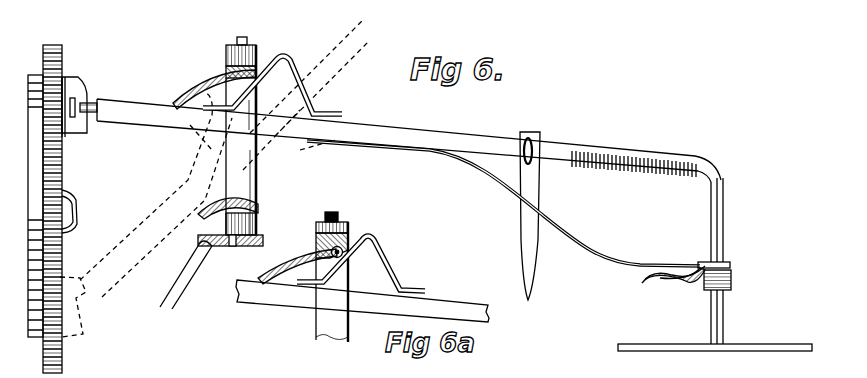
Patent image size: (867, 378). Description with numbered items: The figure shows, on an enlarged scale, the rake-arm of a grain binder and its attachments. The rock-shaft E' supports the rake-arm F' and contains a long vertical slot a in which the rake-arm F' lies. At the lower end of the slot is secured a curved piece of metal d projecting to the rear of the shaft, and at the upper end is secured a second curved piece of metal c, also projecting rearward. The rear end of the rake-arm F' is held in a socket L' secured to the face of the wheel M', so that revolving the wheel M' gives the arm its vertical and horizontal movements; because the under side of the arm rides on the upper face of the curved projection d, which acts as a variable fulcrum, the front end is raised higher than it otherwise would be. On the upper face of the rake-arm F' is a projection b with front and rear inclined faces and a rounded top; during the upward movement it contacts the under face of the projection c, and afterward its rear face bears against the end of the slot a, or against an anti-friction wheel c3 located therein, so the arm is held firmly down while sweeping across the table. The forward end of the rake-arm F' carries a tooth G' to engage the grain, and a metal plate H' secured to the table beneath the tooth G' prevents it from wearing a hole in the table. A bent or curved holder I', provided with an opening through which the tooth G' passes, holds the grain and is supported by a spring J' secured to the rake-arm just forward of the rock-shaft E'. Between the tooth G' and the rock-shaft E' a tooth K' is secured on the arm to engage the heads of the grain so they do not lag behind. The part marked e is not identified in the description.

In FIG. 6, the socket L' is at (81, 99).
In FIG. 6, the wheel M' is at (54, 209).
In FIG. 6, the bracket e is at (53, 207).
In FIG. 6, the rock-shaft E' is at (251, 48).
In FIG. 6, the curved piece of metal c is at (214, 89).
In FIG. 6a, the curved piece of metal c is at (297, 263).
In FIG. 6, the projection b is at (272, 85).
In FIG. 6a, the projection b is at (361, 263).
In FIG. 6, the vertical slot a is at (241, 140).
In FIG. 6a, the vertical slot a is at (332, 282).
In FIG. 6, the curved piece of metal d is at (211, 252).
In FIG. 6, the rake-arm F' is at (409, 140).
In FIG. 6a, the rake-arm F' is at (362, 301).
In FIG. 6, the tooth K' is at (542, 216).
In FIG. 6, the spring J' is at (503, 203).
In FIG. 6, the tooth G' is at (724, 261).
In FIG. 6, the holder I' is at (673, 287).
In FIG. 6, the metal plate H' is at (715, 336).
In FIG. 6a, the anti-friction wheel c3 is at (343, 246).